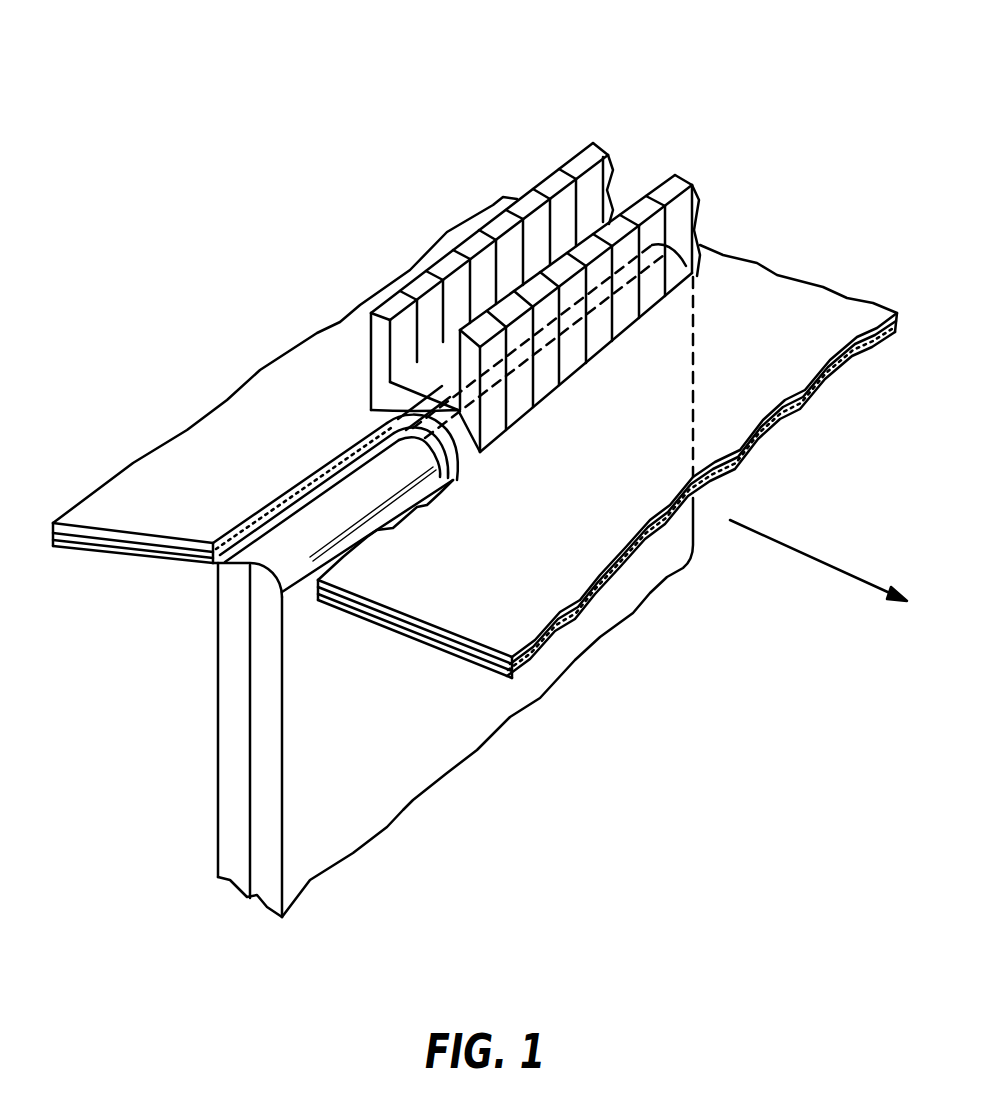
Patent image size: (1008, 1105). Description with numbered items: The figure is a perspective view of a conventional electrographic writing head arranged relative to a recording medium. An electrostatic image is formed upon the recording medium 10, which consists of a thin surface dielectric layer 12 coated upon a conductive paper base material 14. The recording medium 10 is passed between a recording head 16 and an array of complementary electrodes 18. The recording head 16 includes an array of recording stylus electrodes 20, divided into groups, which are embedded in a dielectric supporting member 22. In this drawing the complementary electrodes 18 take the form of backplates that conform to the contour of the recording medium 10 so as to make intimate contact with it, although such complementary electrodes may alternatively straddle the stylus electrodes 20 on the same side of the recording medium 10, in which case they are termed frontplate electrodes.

The recording medium 10 is at (316, 312).
The surface dielectric layer 12 is at (155, 548).
The conductive paper base material 14 is at (124, 533).
The recording head 16 is at (200, 797).
The array of complementary electrodes 18 is at (603, 106).
The recording stylus electrodes 20 is at (327, 505).
The dielectric supporting member 22 is at (238, 698).